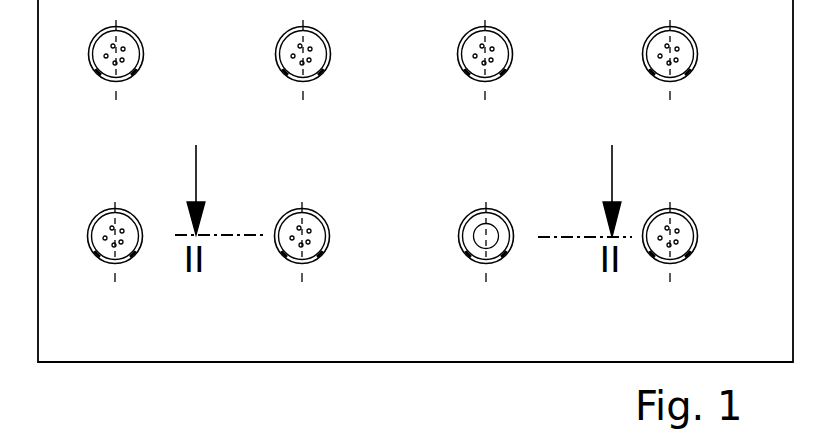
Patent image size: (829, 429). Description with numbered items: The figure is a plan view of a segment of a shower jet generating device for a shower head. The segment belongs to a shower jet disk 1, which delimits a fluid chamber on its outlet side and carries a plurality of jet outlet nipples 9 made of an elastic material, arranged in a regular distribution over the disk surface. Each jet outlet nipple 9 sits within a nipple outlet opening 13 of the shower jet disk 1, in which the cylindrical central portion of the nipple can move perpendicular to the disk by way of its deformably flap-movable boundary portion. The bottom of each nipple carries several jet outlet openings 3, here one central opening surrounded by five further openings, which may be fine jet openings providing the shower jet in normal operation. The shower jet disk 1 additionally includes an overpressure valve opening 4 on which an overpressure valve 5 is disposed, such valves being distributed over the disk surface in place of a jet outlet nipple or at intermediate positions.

The shower jet disk 1 is at (172, 333).
The jet outlet opening 3 is at (292, 240).
The overpressure valve opening 4 is at (474, 262).
The overpressure valve 5 is at (505, 260).
The jet outlet nipple 9 is at (135, 78).
The nipple outlet opening 13 is at (104, 80).